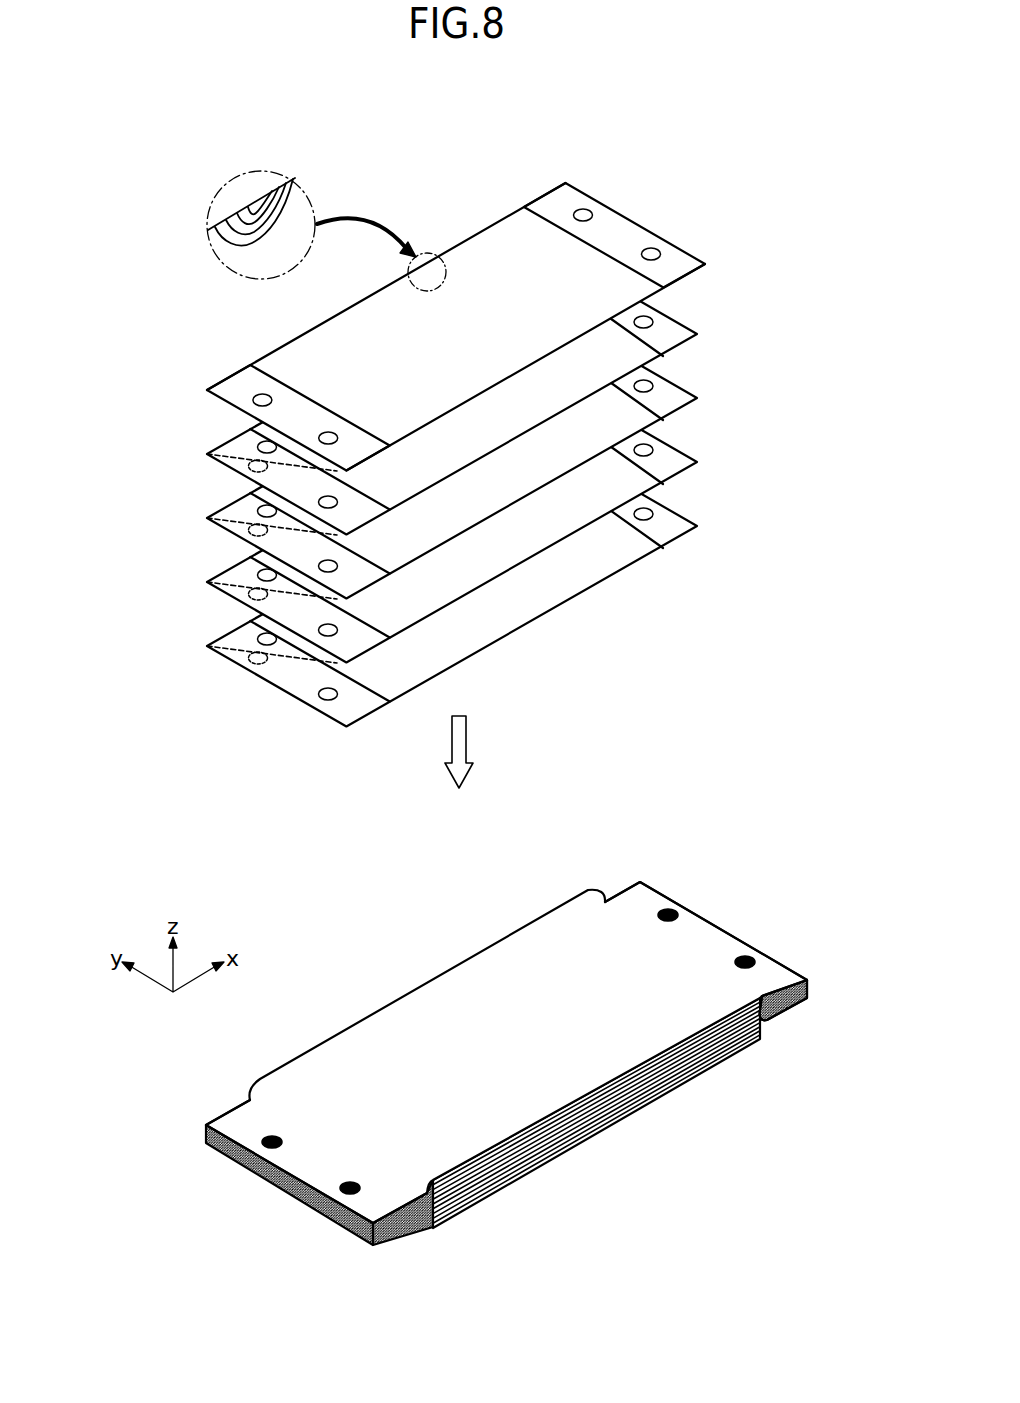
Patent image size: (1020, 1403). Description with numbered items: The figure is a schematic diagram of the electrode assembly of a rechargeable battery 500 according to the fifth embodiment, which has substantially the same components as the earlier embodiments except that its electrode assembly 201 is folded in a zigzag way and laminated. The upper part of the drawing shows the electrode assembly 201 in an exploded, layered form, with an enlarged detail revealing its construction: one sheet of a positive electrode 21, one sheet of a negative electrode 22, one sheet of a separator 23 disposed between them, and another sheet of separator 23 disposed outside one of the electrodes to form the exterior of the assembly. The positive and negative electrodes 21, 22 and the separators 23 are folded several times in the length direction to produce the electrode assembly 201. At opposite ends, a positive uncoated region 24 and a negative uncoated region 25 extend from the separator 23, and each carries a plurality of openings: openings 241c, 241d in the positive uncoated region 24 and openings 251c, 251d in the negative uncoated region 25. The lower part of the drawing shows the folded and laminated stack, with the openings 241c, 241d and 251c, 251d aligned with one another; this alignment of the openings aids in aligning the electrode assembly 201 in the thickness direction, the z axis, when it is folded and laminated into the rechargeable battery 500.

The positive electrode 21 is at (250, 208).
The negative electrode 22 is at (232, 238).
The separator 23 is at (286, 192).
The positive uncoated region 24 is at (265, 796).
The opening 241c is at (252, 398).
The opening 241d is at (318, 440).
The negative uncoated region 25 is at (676, 550).
The opening 251c is at (582, 209).
The opening 251d is at (653, 248).
The electrode assembly 201 is at (479, 689).
The rechargeable battery 500 is at (548, 817).